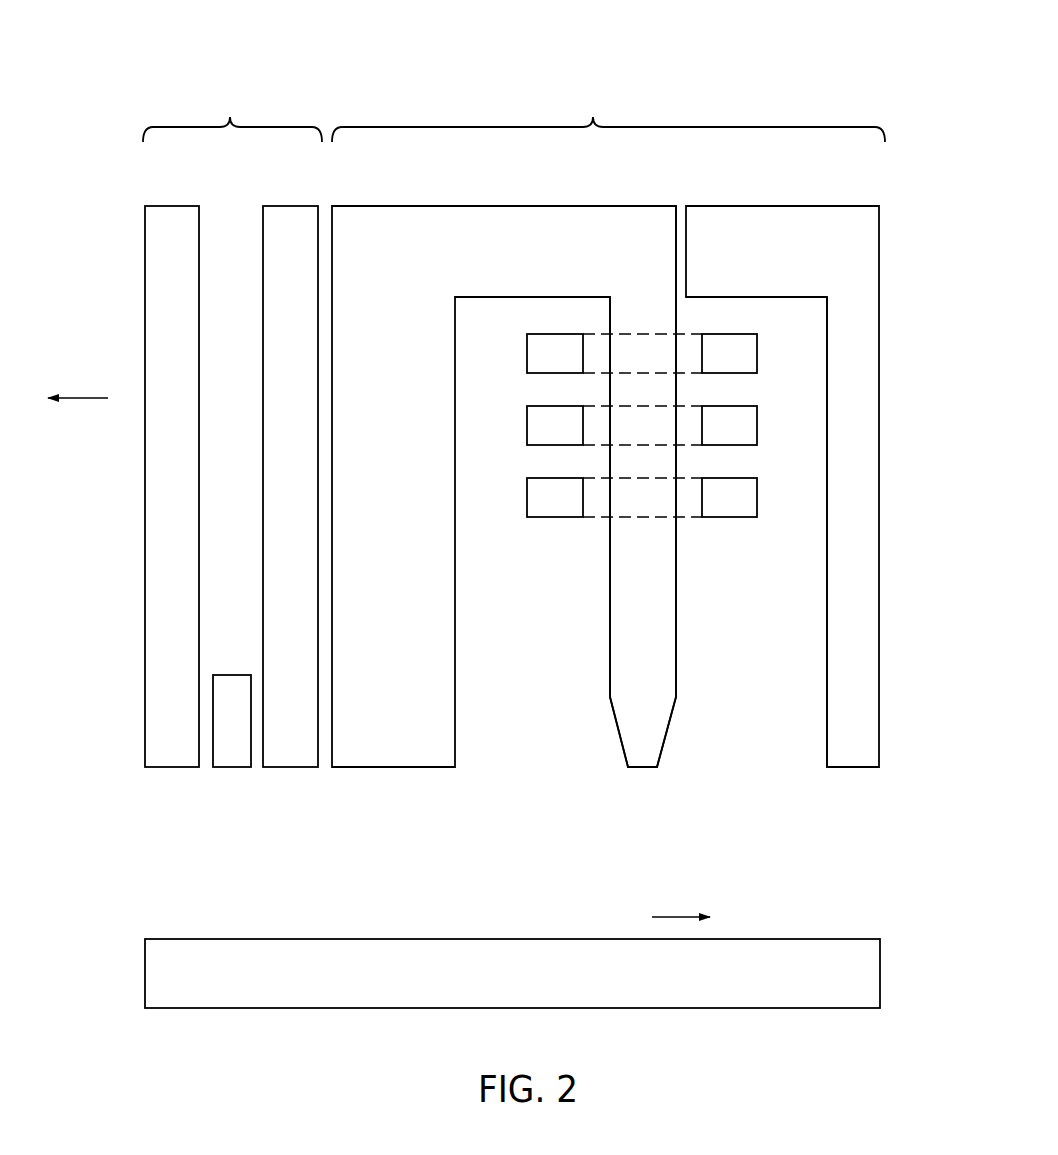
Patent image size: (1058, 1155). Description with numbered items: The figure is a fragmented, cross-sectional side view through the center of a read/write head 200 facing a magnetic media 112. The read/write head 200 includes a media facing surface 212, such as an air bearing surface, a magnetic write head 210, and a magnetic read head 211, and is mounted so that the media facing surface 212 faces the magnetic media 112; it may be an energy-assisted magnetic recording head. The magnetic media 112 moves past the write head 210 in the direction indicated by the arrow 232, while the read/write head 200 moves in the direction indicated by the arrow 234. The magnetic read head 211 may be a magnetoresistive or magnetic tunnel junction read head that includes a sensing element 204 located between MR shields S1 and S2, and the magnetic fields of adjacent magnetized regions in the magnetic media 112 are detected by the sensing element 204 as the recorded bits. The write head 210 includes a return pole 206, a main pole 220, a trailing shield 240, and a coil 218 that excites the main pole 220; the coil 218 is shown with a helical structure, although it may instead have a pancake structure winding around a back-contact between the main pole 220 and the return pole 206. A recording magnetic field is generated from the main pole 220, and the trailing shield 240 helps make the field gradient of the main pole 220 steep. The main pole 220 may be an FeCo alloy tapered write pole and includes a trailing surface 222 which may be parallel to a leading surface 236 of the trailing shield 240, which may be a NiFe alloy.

The read/write head 200 is at (143, 34).
The magnetic read head 211 is at (230, 117).
The magnetic write head 210 is at (593, 117).
The MR shield S1 is at (168, 768).
The MR shield S2 is at (293, 768).
The MR sensing element 204 is at (232, 768).
The return pole 206 is at (397, 768).
The trailing surface 222 is at (677, 683).
The main pole 220 is at (620, 725).
The media facing surface 212 is at (645, 768).
The coil 218 is at (555, 513).
The trailing shield 240 is at (880, 730).
The leading surface 236 is at (827, 598).
The magnetic media 112 is at (880, 972).
The arrow 232 is at (670, 915).
The arrow 234 is at (88, 397).